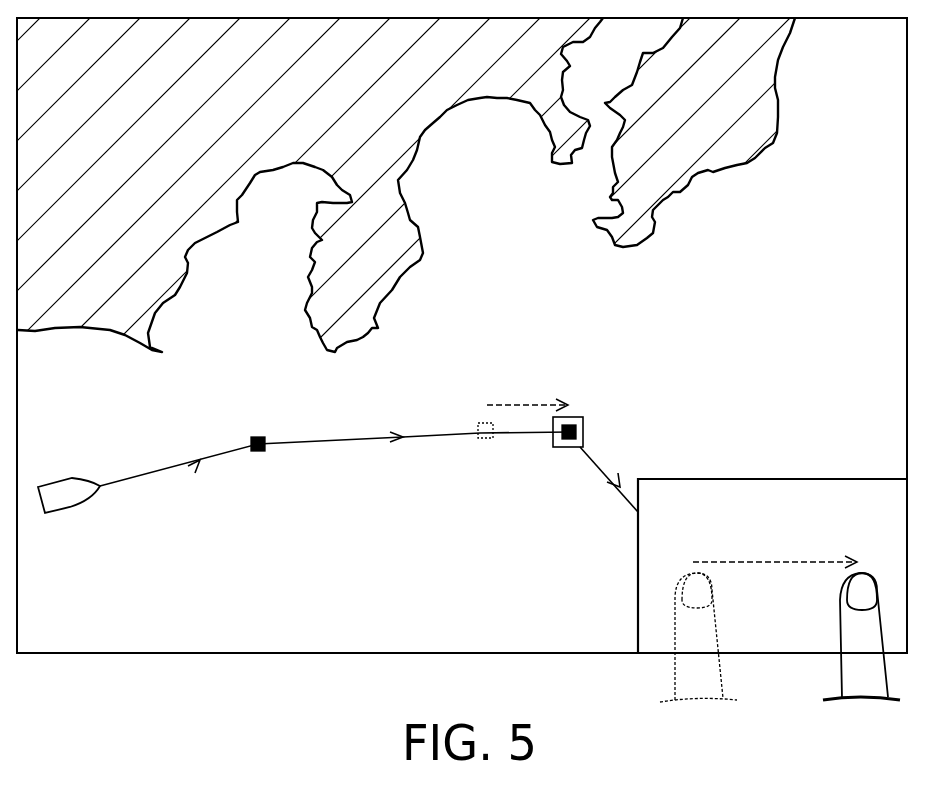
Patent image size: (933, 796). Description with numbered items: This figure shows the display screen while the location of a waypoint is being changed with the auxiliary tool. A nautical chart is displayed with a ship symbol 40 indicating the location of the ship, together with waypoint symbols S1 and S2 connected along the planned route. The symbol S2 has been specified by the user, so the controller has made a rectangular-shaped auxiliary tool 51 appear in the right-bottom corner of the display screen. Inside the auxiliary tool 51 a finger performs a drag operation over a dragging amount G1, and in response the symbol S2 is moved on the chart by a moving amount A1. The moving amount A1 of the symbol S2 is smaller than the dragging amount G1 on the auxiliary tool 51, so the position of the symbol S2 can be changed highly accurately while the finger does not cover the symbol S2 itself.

The ship symbol 40 is at (65, 508).
The symbol indicating a waypoint S1 is at (257, 436).
The symbol indicating a waypoint S2 is at (580, 430).
The moving amount A1 is at (527, 400).
The auxiliary tool 51 is at (848, 478).
The dragging amount G1 is at (775, 558).